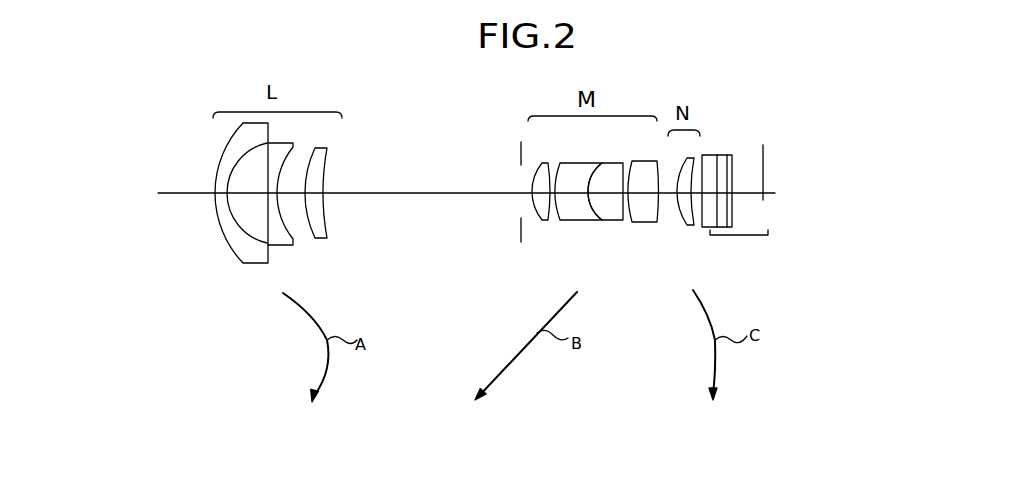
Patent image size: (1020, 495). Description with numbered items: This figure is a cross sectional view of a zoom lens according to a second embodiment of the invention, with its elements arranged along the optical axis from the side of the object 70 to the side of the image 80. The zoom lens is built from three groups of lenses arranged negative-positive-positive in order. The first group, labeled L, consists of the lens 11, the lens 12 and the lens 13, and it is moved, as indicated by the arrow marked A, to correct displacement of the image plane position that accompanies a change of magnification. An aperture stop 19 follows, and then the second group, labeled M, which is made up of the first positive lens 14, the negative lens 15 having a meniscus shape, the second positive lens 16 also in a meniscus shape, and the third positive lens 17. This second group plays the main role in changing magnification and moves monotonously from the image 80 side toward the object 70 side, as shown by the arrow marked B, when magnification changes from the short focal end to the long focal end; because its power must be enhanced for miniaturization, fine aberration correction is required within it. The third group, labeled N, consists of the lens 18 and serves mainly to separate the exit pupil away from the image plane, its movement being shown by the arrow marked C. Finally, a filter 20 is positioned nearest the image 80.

The lens 11 is at (242, 255).
The lens 12 is at (278, 245).
The lens 13 is at (318, 237).
The first positive lens 14 is at (542, 220).
The negative lens 15 is at (580, 220).
The second positive lens 16 is at (613, 220).
The third positive lens 17 is at (645, 222).
The lens 18 is at (688, 225).
The aperture stop 19 is at (520, 242).
The filter 20 is at (742, 235).
The object 70 is at (99, 195).
The image 80 is at (829, 173).